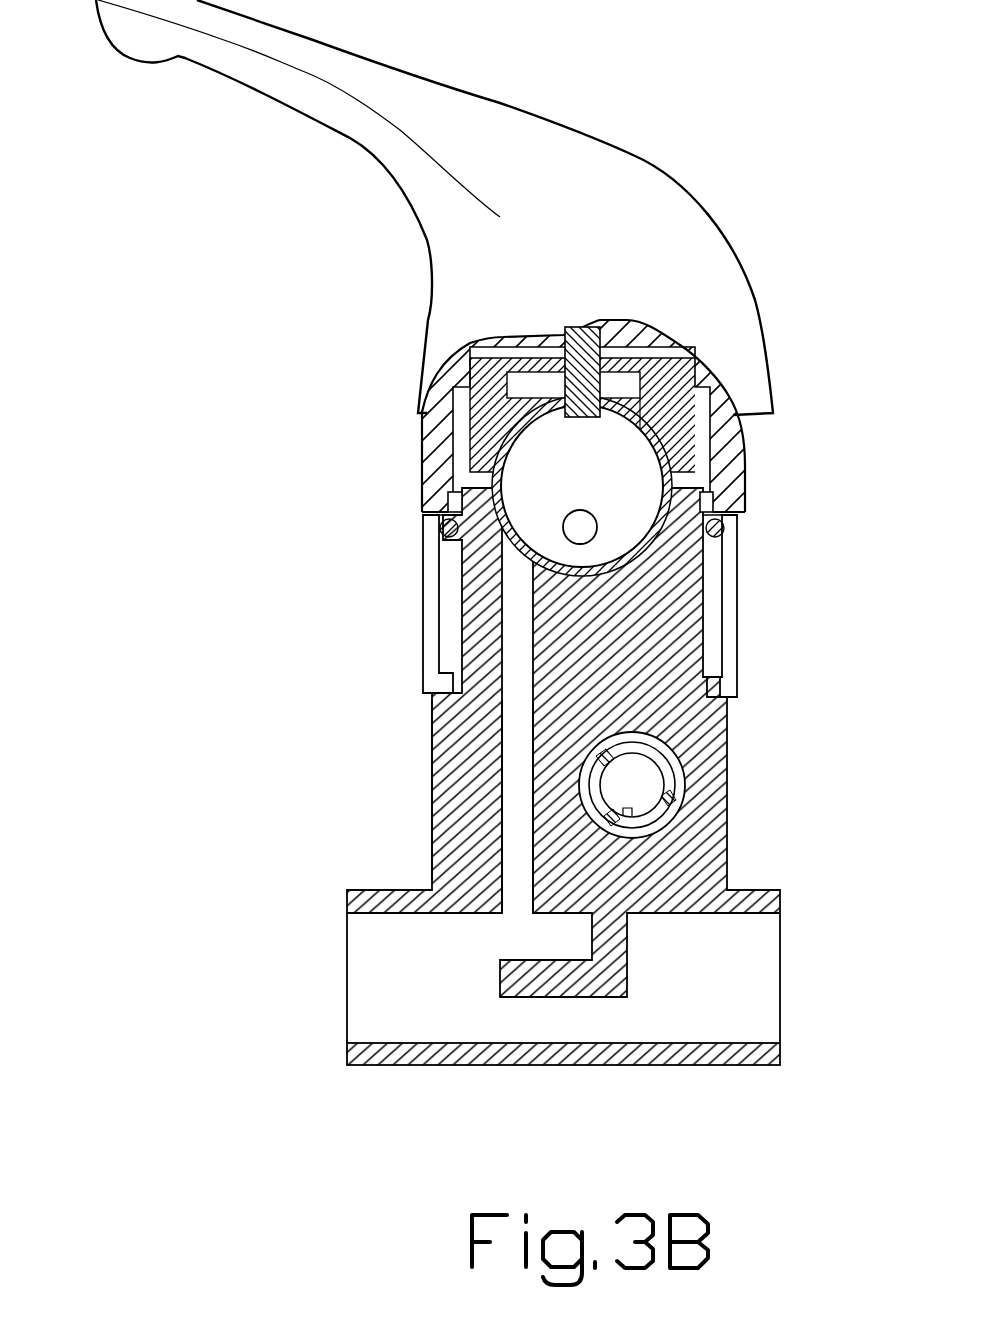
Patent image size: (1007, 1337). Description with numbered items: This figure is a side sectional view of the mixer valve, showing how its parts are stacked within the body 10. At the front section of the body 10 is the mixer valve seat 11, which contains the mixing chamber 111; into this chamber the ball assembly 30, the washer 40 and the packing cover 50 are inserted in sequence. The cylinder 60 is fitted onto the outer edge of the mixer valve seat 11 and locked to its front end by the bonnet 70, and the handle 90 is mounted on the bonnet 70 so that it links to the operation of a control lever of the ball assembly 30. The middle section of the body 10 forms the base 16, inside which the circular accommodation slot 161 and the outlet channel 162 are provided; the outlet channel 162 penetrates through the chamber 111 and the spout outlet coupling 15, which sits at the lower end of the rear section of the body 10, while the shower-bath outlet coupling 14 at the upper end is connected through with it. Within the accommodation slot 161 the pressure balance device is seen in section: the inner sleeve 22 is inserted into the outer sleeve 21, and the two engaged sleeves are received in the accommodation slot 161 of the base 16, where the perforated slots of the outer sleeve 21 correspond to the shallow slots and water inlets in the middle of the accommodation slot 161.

The handle 90 is at (692, 193).
The bonnet 70 is at (748, 447).
The packing cover 50 is at (467, 392).
The washer 40 is at (488, 423).
The ball assembly 30 is at (673, 438).
The mixing chamber 111 is at (678, 504).
The body 10 is at (430, 783).
The mixer valve seat 11 is at (447, 503).
The cylinder 60 is at (420, 575).
The accommodation slot 161 is at (665, 735).
The outer sleeve 21 is at (700, 728).
The inner sleeve 22 is at (657, 810).
The base 16 is at (450, 837).
The spout outlet coupling 15 is at (370, 890).
The shower-bath outlet coupling 14 is at (762, 893).
The outlet channel 162 is at (510, 900).